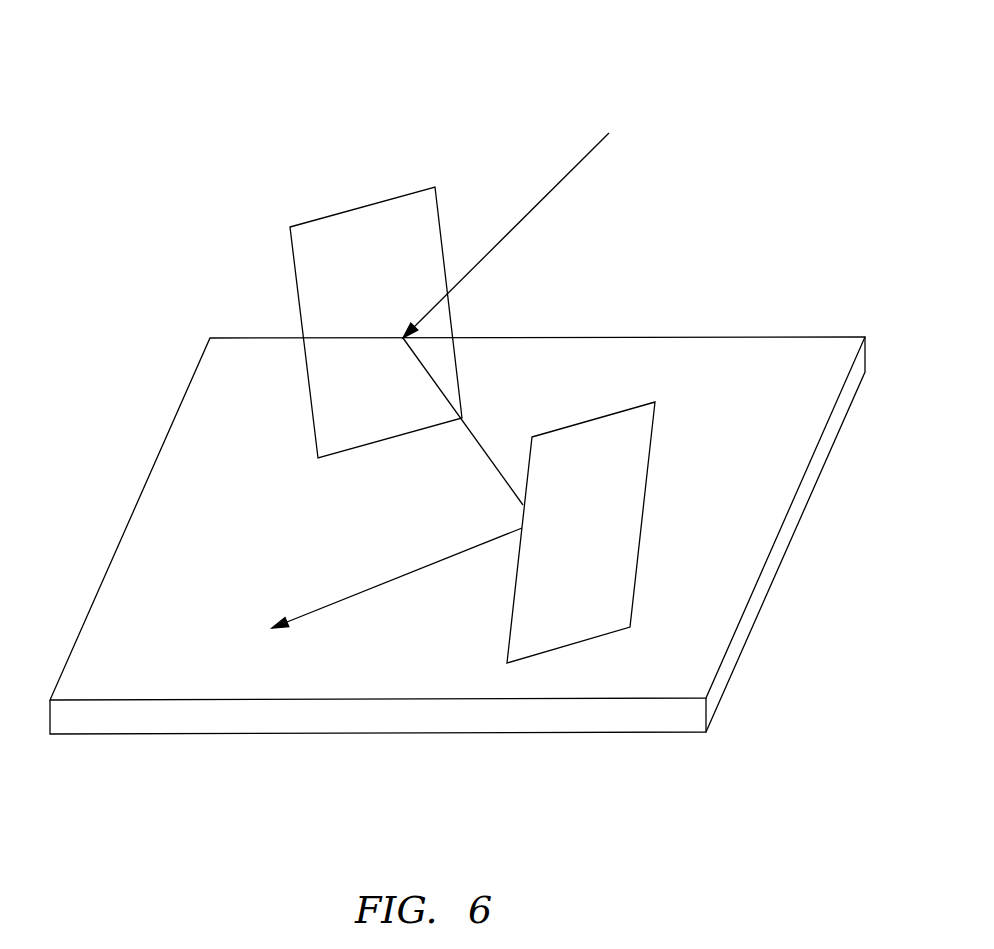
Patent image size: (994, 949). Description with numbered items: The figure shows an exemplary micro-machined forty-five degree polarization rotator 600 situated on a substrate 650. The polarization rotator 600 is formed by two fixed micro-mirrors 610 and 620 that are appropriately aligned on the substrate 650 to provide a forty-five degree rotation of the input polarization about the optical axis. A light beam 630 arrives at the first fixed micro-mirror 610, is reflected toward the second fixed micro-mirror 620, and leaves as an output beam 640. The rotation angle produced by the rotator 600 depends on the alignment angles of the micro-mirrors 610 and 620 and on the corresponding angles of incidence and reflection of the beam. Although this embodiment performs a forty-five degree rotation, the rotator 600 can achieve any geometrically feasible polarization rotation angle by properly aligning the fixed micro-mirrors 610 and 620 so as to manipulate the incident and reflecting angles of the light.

The 45° polarization rotator 600 is at (772, 106).
The fixed micro-mirror 610 is at (322, 215).
The fixed micro-mirror 620 is at (643, 513).
The incident light beam 630 is at (529, 213).
The reflected output light beam 640 is at (387, 585).
The substrate 650 is at (490, 718).